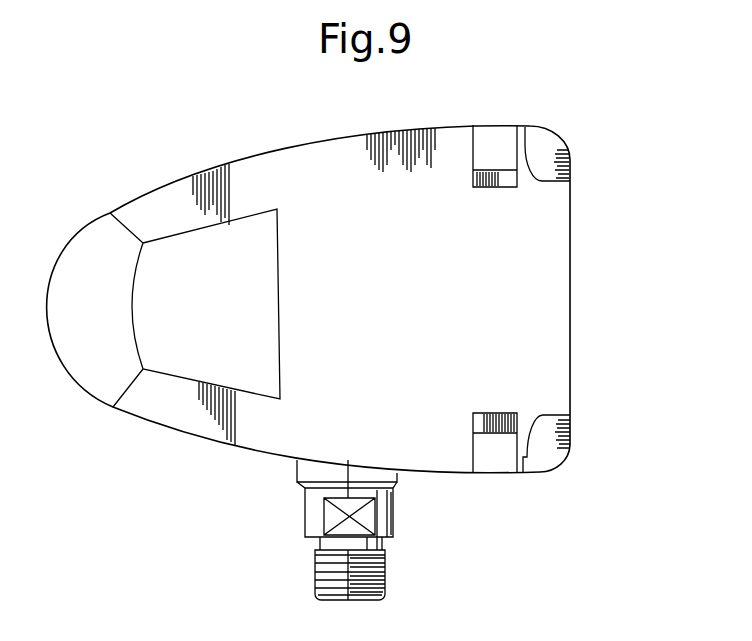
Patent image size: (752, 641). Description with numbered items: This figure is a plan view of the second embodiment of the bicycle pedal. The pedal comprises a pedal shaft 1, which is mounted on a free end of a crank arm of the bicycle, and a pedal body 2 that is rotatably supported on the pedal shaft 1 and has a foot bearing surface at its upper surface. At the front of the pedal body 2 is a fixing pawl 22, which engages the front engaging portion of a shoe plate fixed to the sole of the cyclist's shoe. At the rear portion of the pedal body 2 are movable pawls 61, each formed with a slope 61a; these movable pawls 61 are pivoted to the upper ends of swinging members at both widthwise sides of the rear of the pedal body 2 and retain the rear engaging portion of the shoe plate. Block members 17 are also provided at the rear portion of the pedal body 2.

The pedal shaft 1 is at (320, 563).
The pedal body 2 is at (345, 136).
The block members 17 is at (548, 170).
The fixing pawl 22 is at (125, 275).
The movable pawls 61 is at (498, 137).
The slopes 61a is at (478, 178).